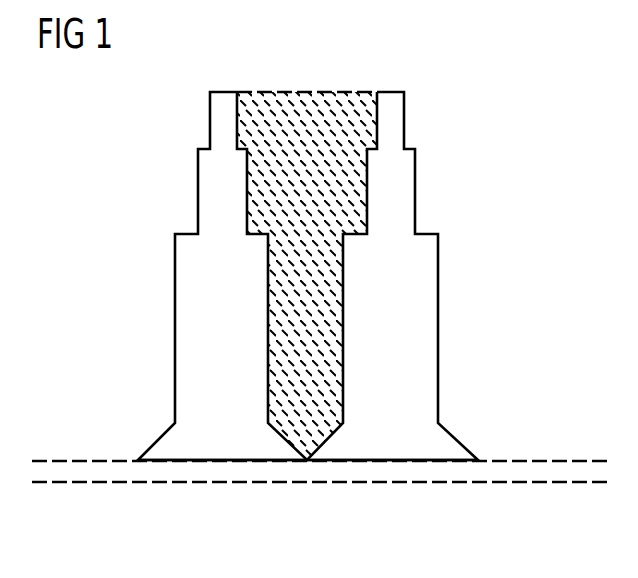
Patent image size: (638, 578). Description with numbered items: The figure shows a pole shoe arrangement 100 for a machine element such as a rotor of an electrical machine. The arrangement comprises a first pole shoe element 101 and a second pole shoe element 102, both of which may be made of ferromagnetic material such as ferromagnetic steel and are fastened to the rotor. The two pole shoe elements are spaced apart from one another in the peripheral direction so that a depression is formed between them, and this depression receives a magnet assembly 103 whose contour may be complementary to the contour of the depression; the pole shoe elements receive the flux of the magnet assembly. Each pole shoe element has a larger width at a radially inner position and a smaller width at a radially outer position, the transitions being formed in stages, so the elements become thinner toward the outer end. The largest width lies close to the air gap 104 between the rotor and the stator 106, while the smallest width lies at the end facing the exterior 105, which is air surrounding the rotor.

The pole shoe arrangement 100 is at (522, 176).
The first pole shoe element 101 is at (427, 330).
The second pole shoe element 102 is at (184, 339).
The magnet assembly 103 is at (310, 102).
The air gap 104 is at (498, 470).
The exterior 105 is at (252, 77).
The stator 106 is at (315, 500).